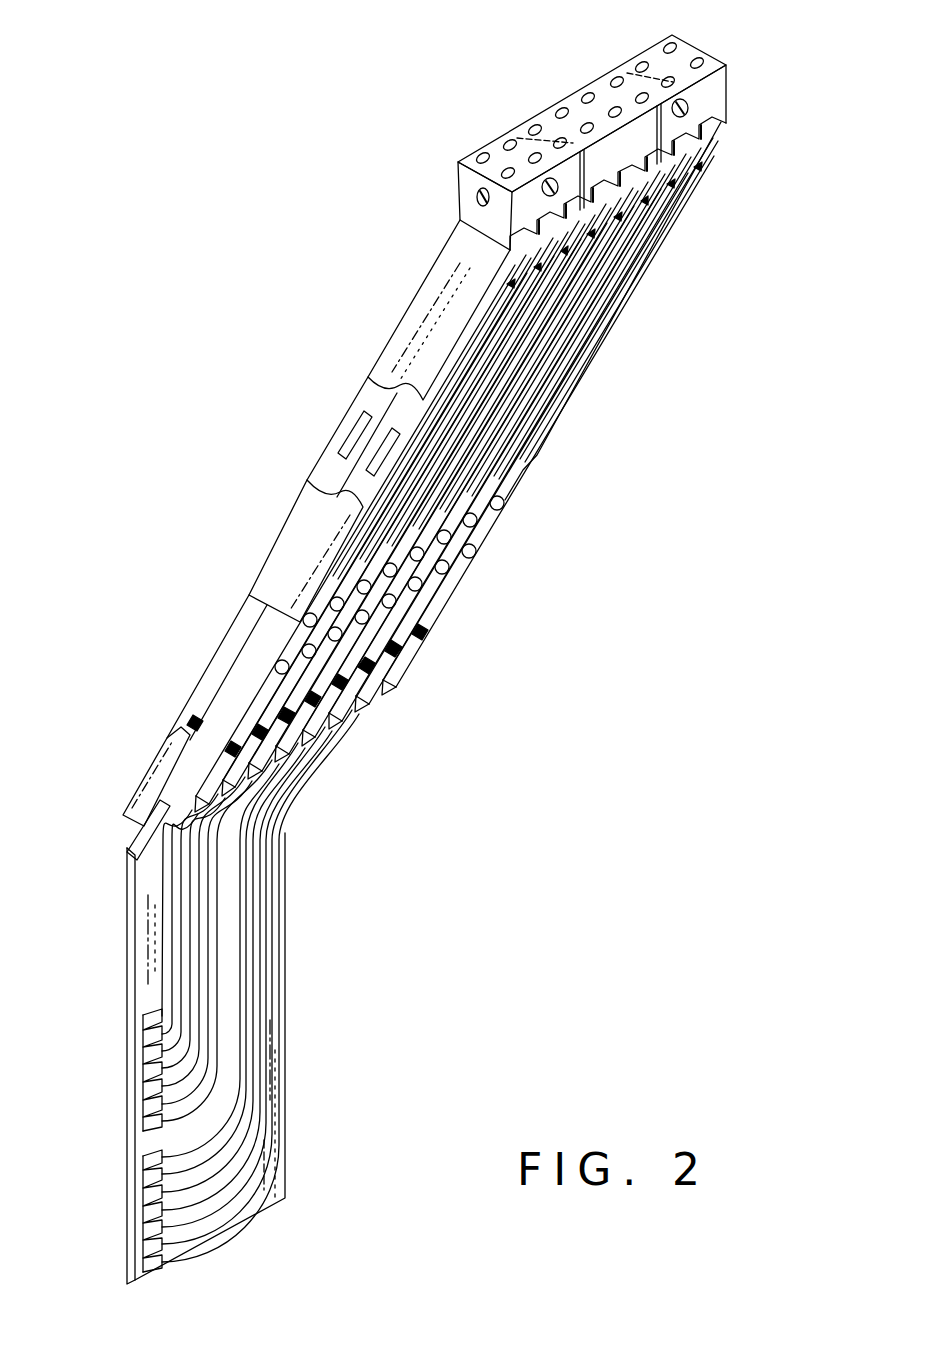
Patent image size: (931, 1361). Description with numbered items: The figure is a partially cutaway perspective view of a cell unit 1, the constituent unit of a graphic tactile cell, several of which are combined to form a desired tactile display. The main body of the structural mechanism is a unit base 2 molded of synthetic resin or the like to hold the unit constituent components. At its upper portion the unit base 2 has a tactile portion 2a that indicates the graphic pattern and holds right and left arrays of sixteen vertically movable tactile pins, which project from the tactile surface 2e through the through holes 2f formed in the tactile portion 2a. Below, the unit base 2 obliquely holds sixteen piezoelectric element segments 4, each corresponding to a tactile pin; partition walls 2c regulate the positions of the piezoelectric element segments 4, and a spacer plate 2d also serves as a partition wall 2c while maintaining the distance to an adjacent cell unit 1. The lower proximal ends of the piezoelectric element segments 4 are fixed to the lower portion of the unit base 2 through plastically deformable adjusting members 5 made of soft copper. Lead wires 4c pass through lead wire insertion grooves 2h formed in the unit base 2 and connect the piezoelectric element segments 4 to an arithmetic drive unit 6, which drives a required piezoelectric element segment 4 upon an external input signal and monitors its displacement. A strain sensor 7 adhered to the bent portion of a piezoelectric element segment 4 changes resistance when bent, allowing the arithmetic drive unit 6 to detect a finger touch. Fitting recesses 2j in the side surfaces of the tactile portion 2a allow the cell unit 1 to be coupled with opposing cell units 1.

The cell unit 1 is at (372, 258).
The unit base 2 is at (457, 243).
The tactile portion 2a is at (727, 80).
The partition wall 2c is at (640, 268).
The spacer plate 2d is at (407, 323).
The tactile surface 2e is at (553, 118).
The through hole 2f is at (590, 93).
The lead wire insertion groove 2h is at (392, 690).
The fitting recess 2j is at (477, 190).
The piezoelectric element segment 4 is at (705, 153).
The lead wire 4c is at (180, 1105).
The adjusting member 5 is at (425, 636).
The arithmetic drive unit 6 is at (140, 930).
The strain sensor 7 is at (380, 456).